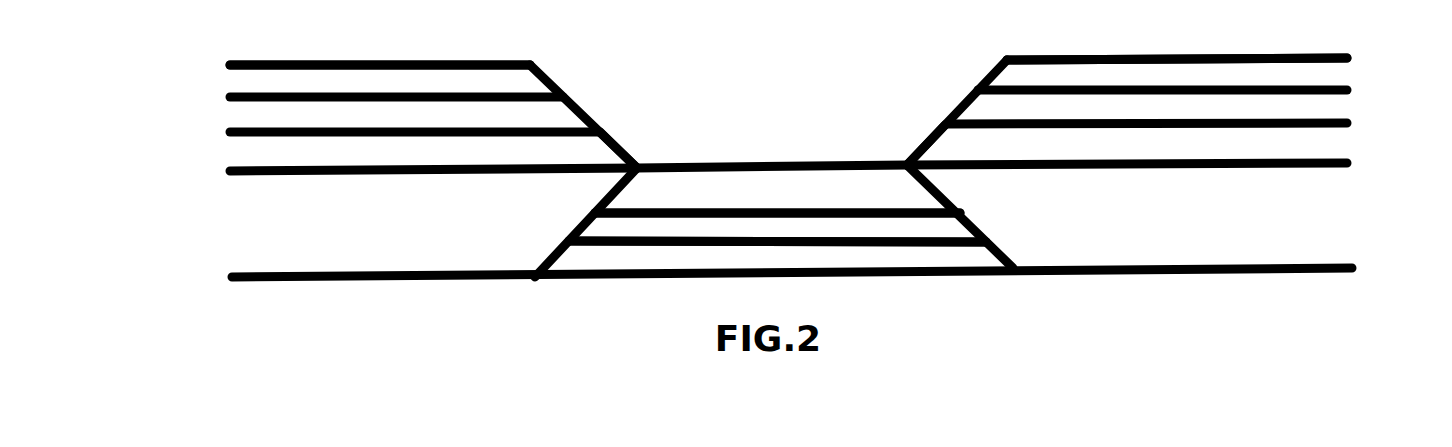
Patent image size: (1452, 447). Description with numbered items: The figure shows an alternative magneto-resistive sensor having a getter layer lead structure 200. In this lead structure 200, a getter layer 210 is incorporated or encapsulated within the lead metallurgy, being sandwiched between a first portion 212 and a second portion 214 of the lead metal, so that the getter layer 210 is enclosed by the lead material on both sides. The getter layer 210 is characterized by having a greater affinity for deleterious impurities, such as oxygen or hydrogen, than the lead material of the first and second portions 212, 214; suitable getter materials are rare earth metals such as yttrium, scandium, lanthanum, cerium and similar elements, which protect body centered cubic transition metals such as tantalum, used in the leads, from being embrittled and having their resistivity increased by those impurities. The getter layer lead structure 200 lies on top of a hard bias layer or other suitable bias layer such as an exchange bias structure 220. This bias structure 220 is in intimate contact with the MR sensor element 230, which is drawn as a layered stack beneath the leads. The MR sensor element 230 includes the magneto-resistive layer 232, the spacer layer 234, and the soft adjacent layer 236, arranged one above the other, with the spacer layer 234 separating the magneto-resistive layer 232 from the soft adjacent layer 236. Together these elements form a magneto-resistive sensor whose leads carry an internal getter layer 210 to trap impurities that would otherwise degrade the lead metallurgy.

The getter layer lead structure 200 is at (222, 60).
The first portion of the lead metallurgy 212 is at (355, 78).
The getter layer 210 is at (566, 110).
The second portion of the lead metallurgy 214 is at (598, 148).
The exchange bias structure 220 is at (338, 258).
The MR sensor element 230 is at (652, 272).
The magneto-resistive layer 232 is at (786, 186).
The spacer layer 234 is at (886, 226).
The soft adjacent layer 236 is at (970, 258).